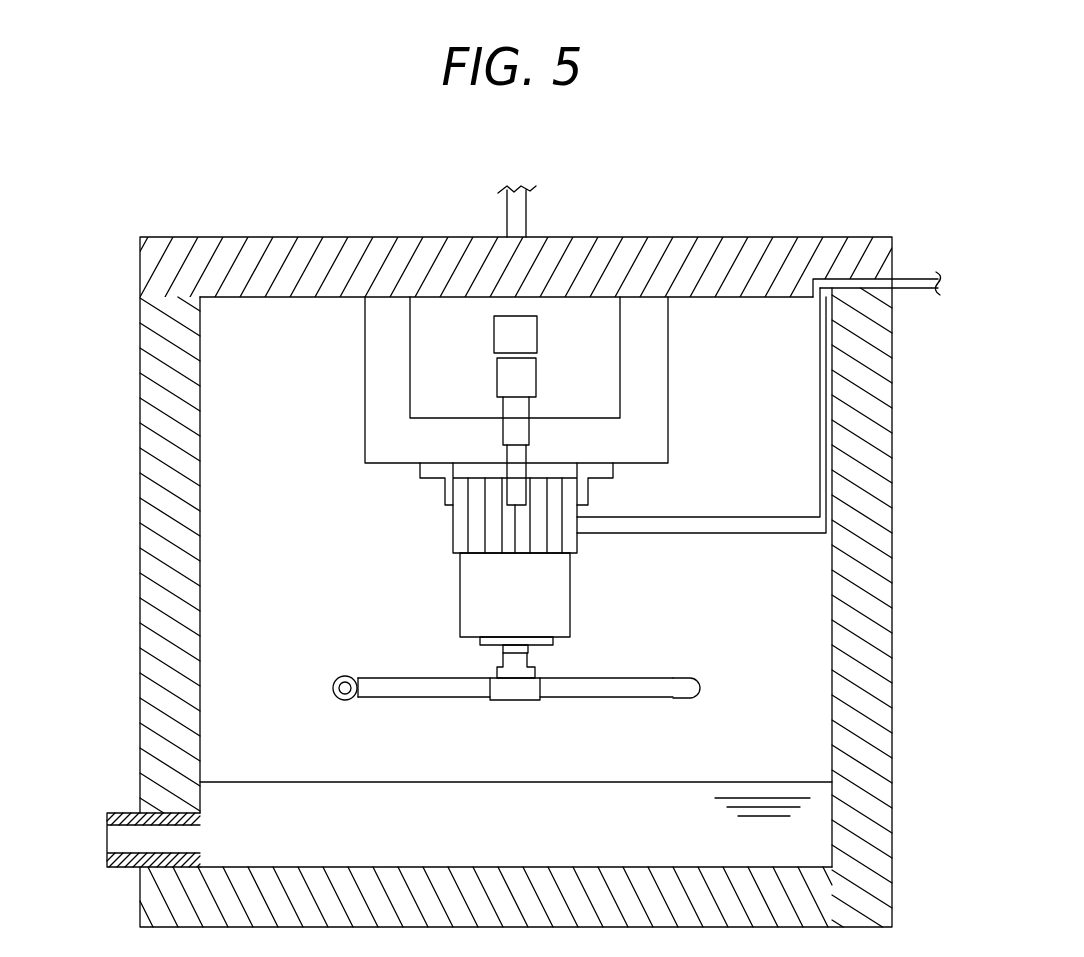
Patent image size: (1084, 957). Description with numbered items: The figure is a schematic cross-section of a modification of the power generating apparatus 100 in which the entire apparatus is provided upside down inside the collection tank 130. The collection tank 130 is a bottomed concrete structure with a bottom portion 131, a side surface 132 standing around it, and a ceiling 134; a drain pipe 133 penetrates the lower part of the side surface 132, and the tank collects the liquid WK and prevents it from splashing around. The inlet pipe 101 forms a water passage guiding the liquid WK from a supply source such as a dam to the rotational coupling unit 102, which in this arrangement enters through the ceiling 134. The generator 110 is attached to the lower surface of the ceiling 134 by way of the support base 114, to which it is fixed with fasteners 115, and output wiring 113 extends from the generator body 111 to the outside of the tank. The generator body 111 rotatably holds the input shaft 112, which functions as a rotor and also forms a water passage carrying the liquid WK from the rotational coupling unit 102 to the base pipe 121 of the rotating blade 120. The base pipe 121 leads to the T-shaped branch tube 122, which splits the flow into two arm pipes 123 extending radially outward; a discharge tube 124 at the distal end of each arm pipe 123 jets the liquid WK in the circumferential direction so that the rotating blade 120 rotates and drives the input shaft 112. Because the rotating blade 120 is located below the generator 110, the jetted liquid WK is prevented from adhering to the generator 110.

The power generating apparatus 100 is at (119, 119).
The inlet pipe 101 is at (528, 214).
The rotational coupling unit 102 is at (493, 374).
The generator 110 is at (578, 609).
The generator body 111 is at (460, 590).
The input shaft 112 is at (523, 451).
The output wiring 113 is at (780, 517).
The support base 114 is at (670, 375).
The fasteners 115 is at (445, 497).
The rotating blade 120 is at (337, 678).
The base pipe 121 is at (530, 662).
The branch tube 122 is at (515, 701).
The arm pipes 123 is at (425, 699).
The discharge tube 124 is at (347, 701).
The collection tank 130 is at (142, 232).
The bottom portion 131 is at (456, 867).
The side surface 132 is at (201, 541).
The drain pipe 133 is at (118, 812).
The ceiling 134 is at (246, 237).
The liquid WK is at (788, 782).